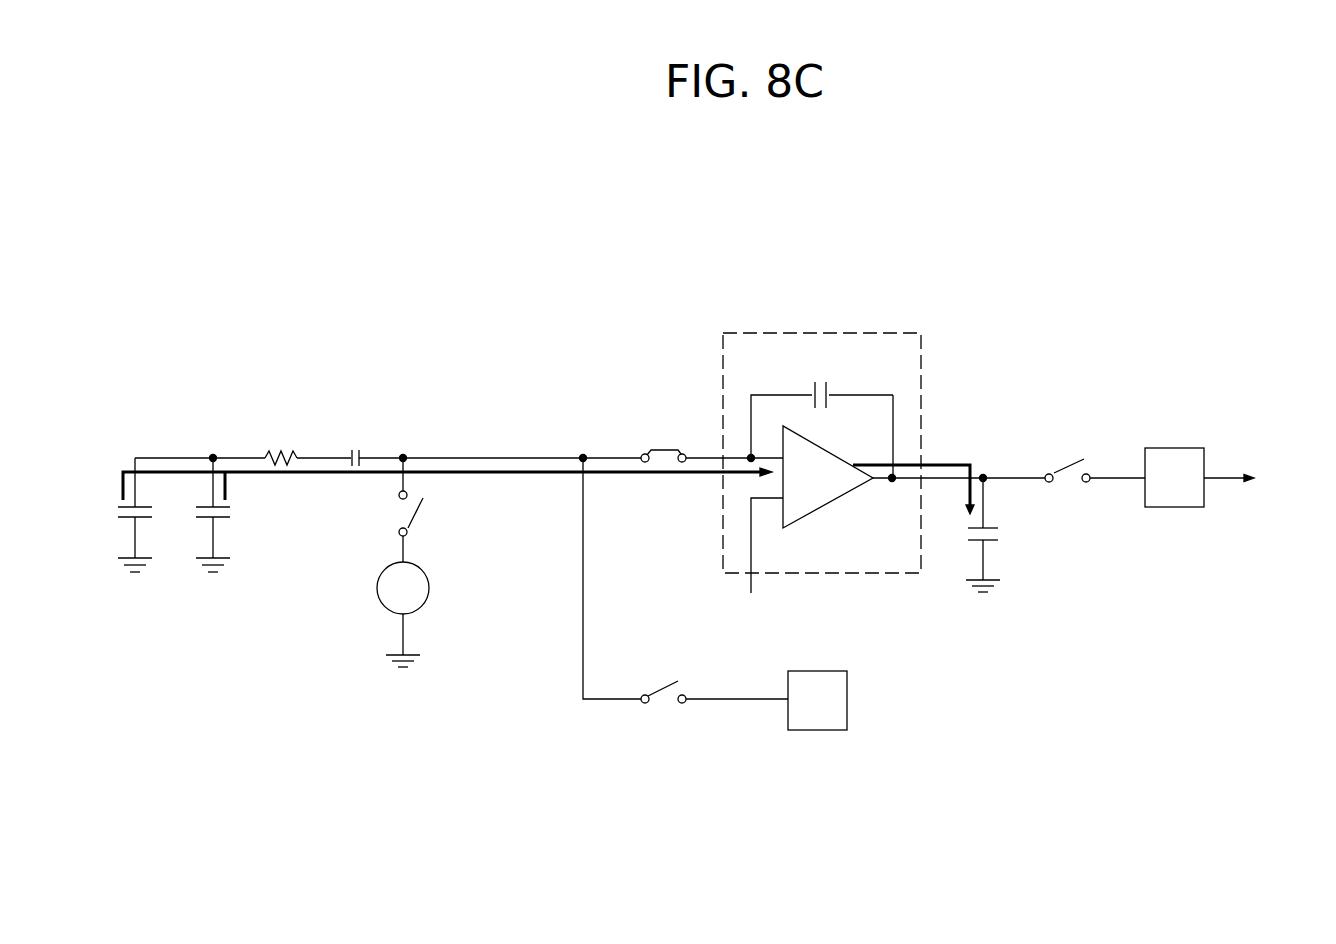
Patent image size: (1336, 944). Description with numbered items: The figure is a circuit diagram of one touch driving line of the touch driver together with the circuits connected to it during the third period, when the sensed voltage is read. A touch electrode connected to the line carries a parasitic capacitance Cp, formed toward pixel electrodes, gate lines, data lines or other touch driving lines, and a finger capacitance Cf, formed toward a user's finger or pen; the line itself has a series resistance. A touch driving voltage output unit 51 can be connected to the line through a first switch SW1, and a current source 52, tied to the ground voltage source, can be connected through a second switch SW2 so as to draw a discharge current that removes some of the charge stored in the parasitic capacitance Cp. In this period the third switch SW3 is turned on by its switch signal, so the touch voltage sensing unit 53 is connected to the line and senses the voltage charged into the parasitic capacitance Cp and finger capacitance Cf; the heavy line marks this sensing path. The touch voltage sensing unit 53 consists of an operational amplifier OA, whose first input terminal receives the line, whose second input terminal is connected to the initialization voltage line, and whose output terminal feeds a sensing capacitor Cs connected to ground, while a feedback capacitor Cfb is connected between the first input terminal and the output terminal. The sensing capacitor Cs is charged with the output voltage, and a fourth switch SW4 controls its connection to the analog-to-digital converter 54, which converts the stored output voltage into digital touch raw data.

The touch driving voltage output unit 51 is at (847, 699).
The current source 52 is at (429, 596).
The touch voltage sensing unit 53 is at (819, 449).
The analog-to-digital converter 54 is at (1174, 507).
The finger capacitance Cf is at (146, 536).
The parasitic capacitance Cp is at (226, 514).
The feedback capacitor Cfb is at (819, 383).
The sensing capacitor Cs is at (996, 534).
The operational amplifier OA is at (833, 500).
The first switch SW1 is at (663, 706).
The second switch SW2 is at (388, 496).
The third switch SW3 is at (644, 444).
The fourth switch SW4 is at (1067, 483).